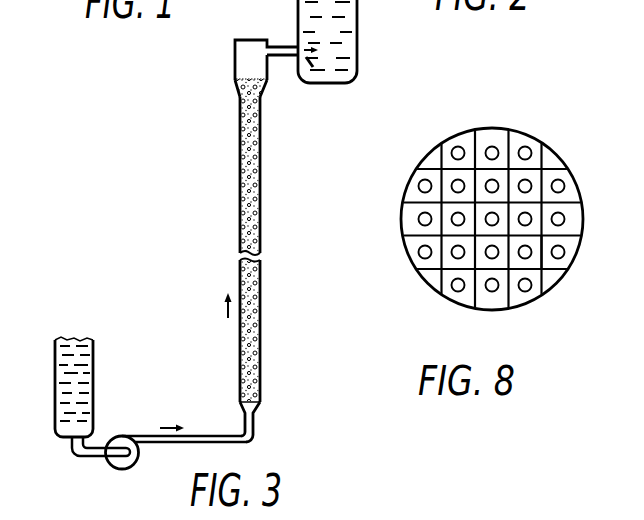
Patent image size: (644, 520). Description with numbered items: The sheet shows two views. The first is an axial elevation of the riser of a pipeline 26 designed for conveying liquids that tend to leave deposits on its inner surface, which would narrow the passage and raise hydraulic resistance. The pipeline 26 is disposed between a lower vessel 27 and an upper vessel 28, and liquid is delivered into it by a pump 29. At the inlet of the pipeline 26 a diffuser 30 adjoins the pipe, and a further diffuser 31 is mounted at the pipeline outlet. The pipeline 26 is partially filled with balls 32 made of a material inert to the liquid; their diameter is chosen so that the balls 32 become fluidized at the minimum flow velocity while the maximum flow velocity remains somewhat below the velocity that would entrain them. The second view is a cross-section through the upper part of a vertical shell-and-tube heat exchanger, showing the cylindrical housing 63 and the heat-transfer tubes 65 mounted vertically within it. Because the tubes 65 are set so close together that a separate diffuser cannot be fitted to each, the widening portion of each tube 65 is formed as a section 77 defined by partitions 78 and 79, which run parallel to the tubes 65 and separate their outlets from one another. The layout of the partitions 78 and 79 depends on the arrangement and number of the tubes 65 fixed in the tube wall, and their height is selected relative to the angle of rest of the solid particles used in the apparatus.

In FIG. 3, the pipeline 26 is at (260, 310).
In FIG. 3, the lower vessel 27 is at (65, 398).
In FIG. 3, the upper vessel 28 is at (348, 32).
In FIG. 3, the pump 29 is at (133, 458).
In FIG. 3, the diffuser 30 is at (254, 412).
In FIG. 3, the diffuser 31 is at (263, 93).
In FIG. 3, the balls 32 is at (260, 218).
In FIG. 8, the cylindrical housing 63 is at (455, 129).
In FIG. 8, the heat-transfer tubes 65 is at (529, 149).
In FIG. 8, the section 77 is at (498, 133).
In FIG. 8, the partition 78 is at (541, 259).
In FIG. 8, the partition 79 is at (532, 269).